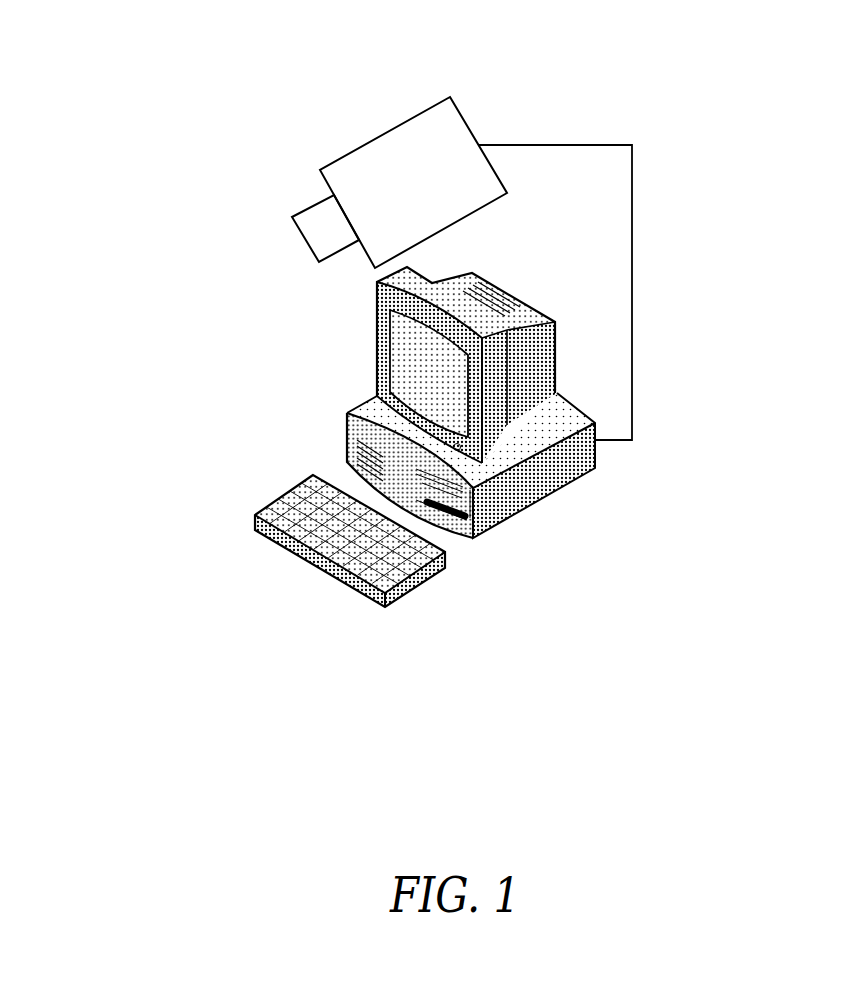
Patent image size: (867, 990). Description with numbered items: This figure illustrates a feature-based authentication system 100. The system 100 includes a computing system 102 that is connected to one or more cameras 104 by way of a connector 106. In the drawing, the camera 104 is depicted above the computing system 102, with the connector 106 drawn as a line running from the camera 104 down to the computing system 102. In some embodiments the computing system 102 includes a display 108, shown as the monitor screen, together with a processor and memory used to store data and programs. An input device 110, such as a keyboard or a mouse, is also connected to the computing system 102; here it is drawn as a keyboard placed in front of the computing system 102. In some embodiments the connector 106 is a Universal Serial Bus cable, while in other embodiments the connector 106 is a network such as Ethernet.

The feature-based authentication system 100 is at (237, 98).
The computing system 102 is at (535, 507).
The camera 104 is at (440, 93).
The connector 106 is at (632, 245).
The display 108 is at (422, 390).
The input device 110 is at (407, 588).